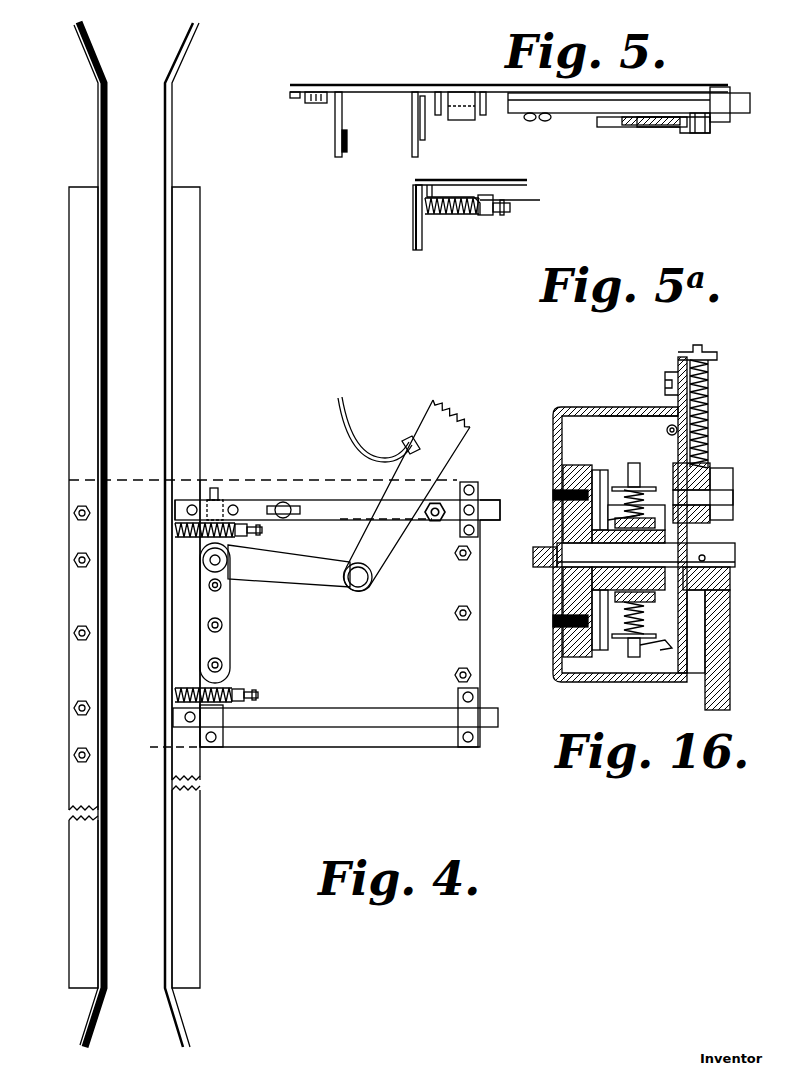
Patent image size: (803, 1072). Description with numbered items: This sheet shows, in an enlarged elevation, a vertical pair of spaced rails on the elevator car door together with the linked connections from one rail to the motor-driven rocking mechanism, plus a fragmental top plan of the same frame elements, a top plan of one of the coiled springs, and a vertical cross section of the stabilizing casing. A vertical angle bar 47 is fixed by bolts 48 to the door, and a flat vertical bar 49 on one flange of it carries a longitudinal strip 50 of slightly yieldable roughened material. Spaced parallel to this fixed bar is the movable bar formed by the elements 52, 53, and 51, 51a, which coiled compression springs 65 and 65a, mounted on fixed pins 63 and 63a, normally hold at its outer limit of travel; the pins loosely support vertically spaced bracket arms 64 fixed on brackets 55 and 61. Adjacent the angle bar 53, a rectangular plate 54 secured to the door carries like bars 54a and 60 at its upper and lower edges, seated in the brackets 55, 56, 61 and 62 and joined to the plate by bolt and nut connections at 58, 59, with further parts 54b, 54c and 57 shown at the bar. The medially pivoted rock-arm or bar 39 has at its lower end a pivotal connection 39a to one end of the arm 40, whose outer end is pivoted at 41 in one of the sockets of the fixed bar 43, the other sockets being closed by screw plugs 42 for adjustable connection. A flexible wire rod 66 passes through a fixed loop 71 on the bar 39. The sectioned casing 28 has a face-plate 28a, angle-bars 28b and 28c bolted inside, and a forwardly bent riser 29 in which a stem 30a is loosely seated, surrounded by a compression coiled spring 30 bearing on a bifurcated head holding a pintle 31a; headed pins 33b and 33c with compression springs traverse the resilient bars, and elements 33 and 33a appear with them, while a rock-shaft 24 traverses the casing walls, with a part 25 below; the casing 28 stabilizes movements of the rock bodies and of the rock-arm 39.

In FIG. 16, the rock-shaft 24 is at (580, 580).
In FIG. 16, the supporting leg 25 is at (725, 700).
In FIG. 16, the casing 28 is at (590, 529).
In FIG. 16, the face-plate 28a is at (660, 418).
In FIG. 16, the angle-bar 28b is at (560, 520).
In FIG. 16, the angle-bar 28c is at (533, 557).
In FIG. 16, the riser 29 is at (678, 357).
In FIG. 16, the compression coiled spring 30 is at (708, 392).
In FIG. 16, the stem 30a is at (706, 378).
In FIG. 16, the pintle 31a is at (700, 485).
In FIG. 16, the hub 33 is at (600, 475).
In FIG. 16, the lower spring 33a is at (664, 618).
In FIG. 16, the headed pin 33b is at (634, 463).
In FIG. 16, the headed pin 33c is at (634, 657).
In FIG. 4, the bar 39 is at (407, 495).
In FIG. 5, the bar 39 is at (665, 133).
In FIG. 4, the pivotal connection 39a is at (358, 580).
In FIG. 4, the arm 40 is at (289, 566).
In FIG. 5, the arm 40 is at (612, 127).
In FIG. 4, the pivot 41 is at (220, 563).
In FIG. 4, the screw closures 42 is at (220, 588).
In FIG. 4, the fixed bar 43 is at (232, 640).
In FIG. 4, the vertical angle bar 47 is at (76, 291).
In FIG. 5, the vertical angle bar 47 is at (306, 103).
In FIG. 4, the bolts 48 is at (74, 513).
In FIG. 4, the flat vertical bar 49 is at (100, 450).
In FIG. 5, the flat vertical bar 49 is at (336, 147).
In FIG. 4, the longitudinal strip 50 is at (100, 425).
In FIG. 5, the longitudinal strip 50 is at (345, 152).
In FIG. 4, the channel member 51 is at (77, 534).
In FIG. 5, the channel member 51 is at (296, 98).
In FIG. 5A, the channel member 51 is at (506, 195).
In FIG. 5A, the wire 51a is at (470, 193).
In FIG. 4, the movable bar 52 is at (166, 160).
In FIG. 5, the movable bar 52 is at (412, 107).
In FIG. 5A, the movable bar 52 is at (413, 228).
In FIG. 4, the vertical angle bar 53 is at (176, 288).
In FIG. 5, the vertical angle bar 53 is at (415, 85).
In FIG. 5A, the vertical angle bar 53 is at (418, 185).
In FIG. 4, the rectangular plate 54 is at (354, 480).
In FIG. 5, the rectangular plate 54 is at (635, 125).
In FIG. 4, the bar 54a is at (336, 530).
In FIG. 5, the bar 54a is at (700, 133).
In FIG. 4, the nut 54b is at (432, 524).
In FIG. 4, the bar end 54c is at (182, 500).
In FIG. 4, the bracket 55 is at (213, 500).
In FIG. 5, the bracket 55 is at (462, 120).
In FIG. 4, the bracket 56 is at (479, 492).
In FIG. 5, the bracket 56 is at (738, 113).
In FIG. 4, the bar extension 57 is at (498, 518).
In FIG. 4, the bolt and nut connection 58 is at (282, 504).
In FIG. 5, the bolt and nut connection 58 is at (548, 121).
In FIG. 4, the bolt and nut connection 59 is at (287, 503).
In FIG. 5, the bolt and nut connection 59 is at (530, 121).
In FIG. 4, the bar 60 is at (355, 728).
In FIG. 4, the bracket 61 is at (212, 745).
In FIG. 4, the bracket 62 is at (460, 748).
In FIG. 4, the fixed pin 63 is at (245, 527).
In FIG. 5A, the fixed pin 63 is at (510, 207).
In FIG. 4, the fixed pin 63a is at (258, 695).
In FIG. 4, the bracket arms 64 is at (244, 536).
In FIG. 5A, the bracket arms 64 is at (484, 215).
In FIG. 4, the coiled compression spring 65 is at (190, 534).
In FIG. 5A, the coiled compression spring 65 is at (448, 215).
In FIG. 4, the coiled compression spring 65a is at (228, 690).
In FIG. 4, the flexible wire rod 66 is at (375, 429).
In FIG. 4, the fixed loop 71 is at (408, 440).